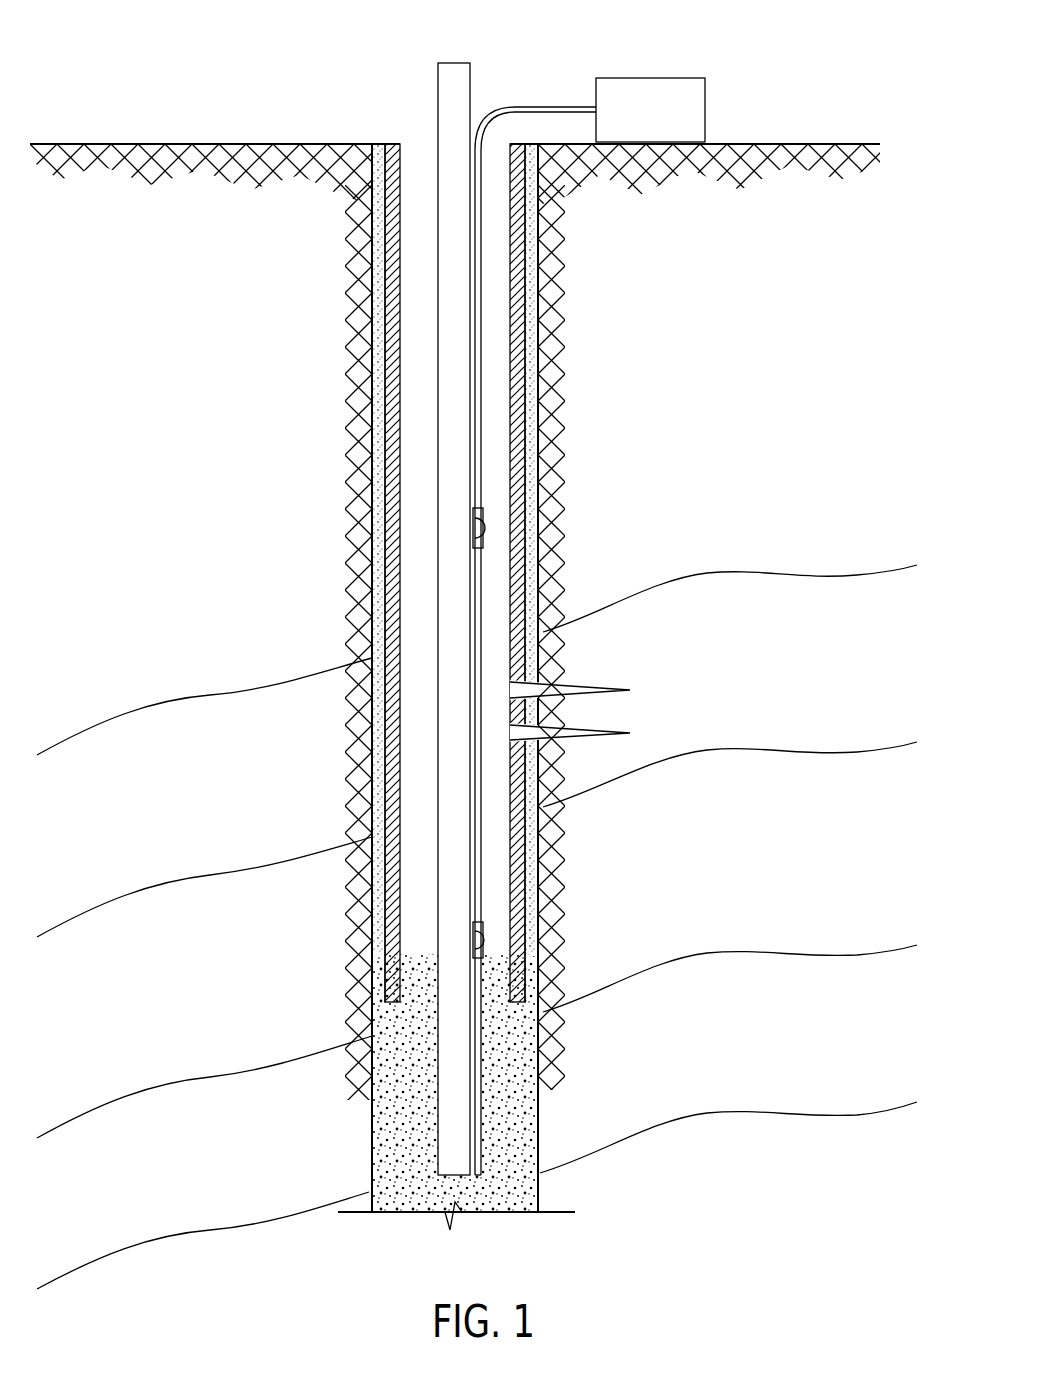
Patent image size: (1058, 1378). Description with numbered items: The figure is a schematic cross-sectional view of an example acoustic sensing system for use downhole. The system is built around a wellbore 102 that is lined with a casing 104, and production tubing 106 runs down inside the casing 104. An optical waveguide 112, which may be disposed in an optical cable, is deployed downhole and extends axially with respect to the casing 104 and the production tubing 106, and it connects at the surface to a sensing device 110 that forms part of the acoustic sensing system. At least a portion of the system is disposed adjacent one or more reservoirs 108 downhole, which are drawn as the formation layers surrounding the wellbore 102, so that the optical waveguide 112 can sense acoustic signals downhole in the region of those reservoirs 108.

The wellbore 102 is at (207, 538).
The casing 104 is at (525, 442).
The production tubing 106 is at (438, 393).
The reservoir 108 is at (882, 664).
The sensing device 110 is at (670, 119).
The optical waveguide 112 is at (553, 107).